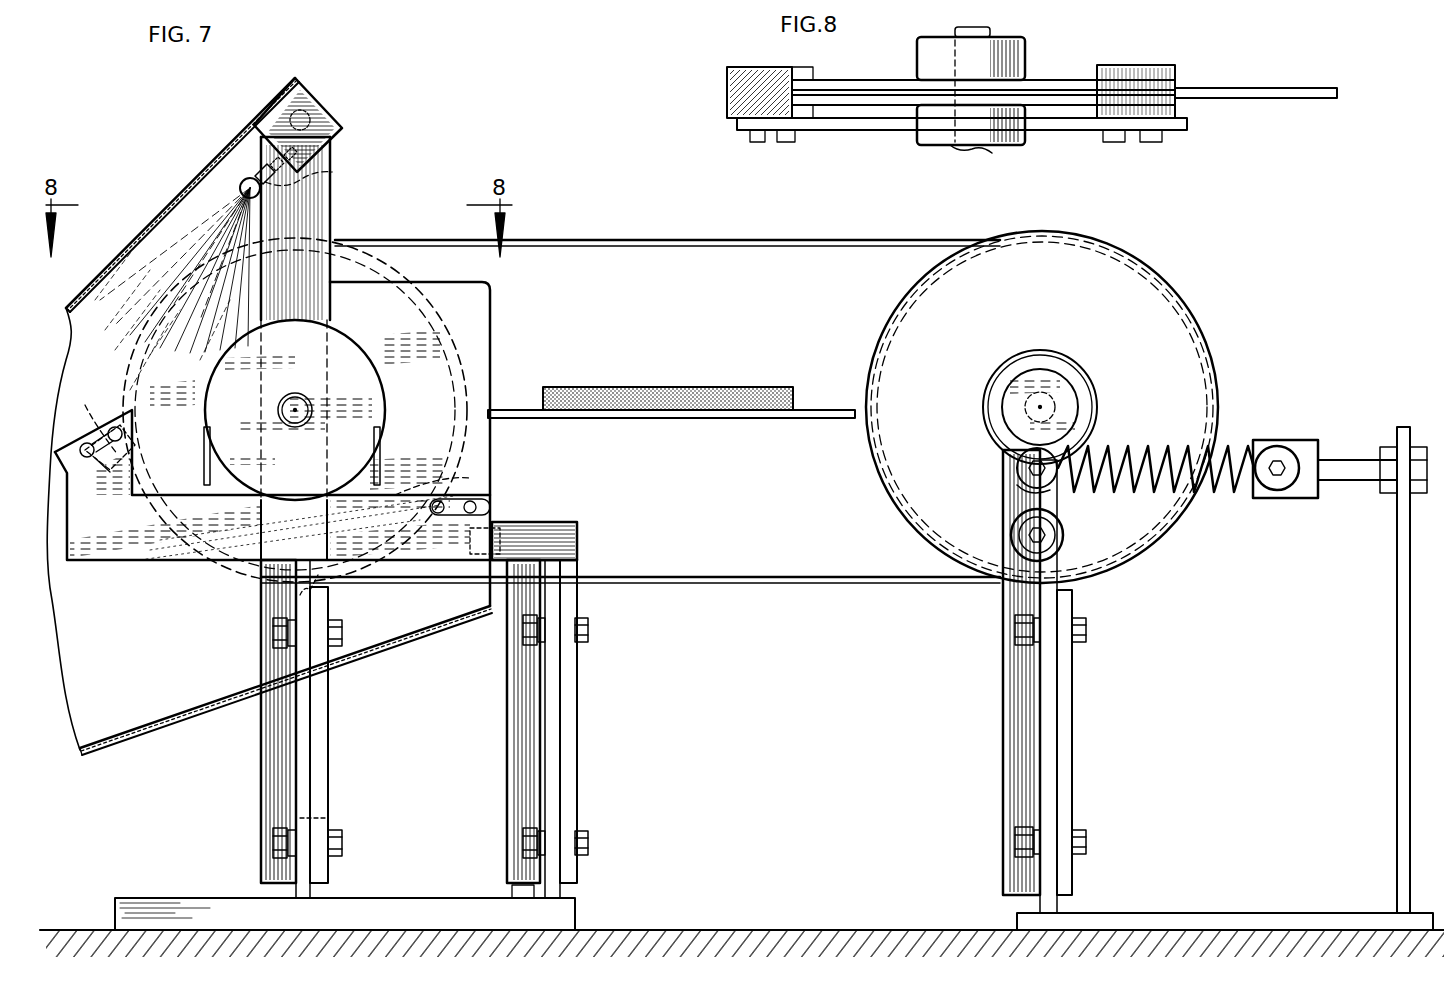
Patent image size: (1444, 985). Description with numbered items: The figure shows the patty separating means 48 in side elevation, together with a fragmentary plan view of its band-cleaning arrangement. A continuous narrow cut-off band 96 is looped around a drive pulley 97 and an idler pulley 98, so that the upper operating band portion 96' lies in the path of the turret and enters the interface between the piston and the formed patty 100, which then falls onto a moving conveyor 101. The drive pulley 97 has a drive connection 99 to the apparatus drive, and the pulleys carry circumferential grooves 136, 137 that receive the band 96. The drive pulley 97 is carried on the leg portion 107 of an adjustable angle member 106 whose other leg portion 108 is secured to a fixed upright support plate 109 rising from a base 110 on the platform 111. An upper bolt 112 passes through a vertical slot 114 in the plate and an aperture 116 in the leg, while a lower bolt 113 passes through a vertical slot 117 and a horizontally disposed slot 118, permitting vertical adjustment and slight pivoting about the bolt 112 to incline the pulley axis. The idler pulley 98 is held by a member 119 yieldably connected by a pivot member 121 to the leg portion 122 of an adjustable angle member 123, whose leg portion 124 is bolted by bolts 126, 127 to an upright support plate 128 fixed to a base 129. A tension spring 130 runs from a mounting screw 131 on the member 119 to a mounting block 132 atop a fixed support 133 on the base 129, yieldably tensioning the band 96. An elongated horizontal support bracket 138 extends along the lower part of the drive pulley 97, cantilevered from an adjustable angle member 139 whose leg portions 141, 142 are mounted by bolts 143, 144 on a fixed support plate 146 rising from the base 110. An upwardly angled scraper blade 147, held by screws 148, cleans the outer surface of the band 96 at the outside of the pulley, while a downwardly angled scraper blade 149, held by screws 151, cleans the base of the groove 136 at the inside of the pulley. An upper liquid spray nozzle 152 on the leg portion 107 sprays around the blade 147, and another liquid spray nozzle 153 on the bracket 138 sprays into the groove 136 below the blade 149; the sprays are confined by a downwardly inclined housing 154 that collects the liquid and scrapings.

In FIG. 7, the patty separating means 48 is at (1232, 318).
In FIG. 7, the cut-off band 96 is at (631, 601).
In FIG. 7, the upper operating band portion 96' is at (667, 219).
In FIG. 8, the upper operating band portion 96' is at (1256, 64).
In FIG. 7, the drive pulley 97 is at (460, 380).
In FIG. 8, the drive pulley 97 is at (1052, 82).
In FIG. 7, the idler pulley 98 is at (1186, 374).
In FIG. 7, the drive connection 99 is at (385, 455).
In FIG. 7, the formed patty 100 is at (690, 386).
In FIG. 7, the moving conveyor 101 is at (598, 410).
In FIG. 7, the adjustable angle member 106 is at (258, 772).
In FIG. 7, the leg portion 107 is at (268, 732).
In FIG. 7, the leg portion 108 is at (320, 745).
In FIG. 7, the fixed upright support plate 109 is at (305, 780).
In FIG. 7, the base 110 is at (570, 912).
In FIG. 7, the platform 111 is at (730, 930).
In FIG. 7, the upper bolt 112 is at (272, 632).
In FIG. 7, the lower bolt 113 is at (272, 848).
In FIG. 7, the vertical slot 114 is at (330, 606).
In FIG. 7, the aperture 116 is at (340, 634).
In FIG. 7, the vertical slot 117 is at (330, 818).
In FIG. 7, the horizontally disposed slot 118 is at (345, 850).
In FIG. 7, the member 119 is at (1012, 495).
In FIG. 7, the pivot member 121 is at (1016, 535).
In FIG. 7, the leg portion 122 is at (1012, 658).
In FIG. 7, the adjustable angle member 123 is at (996, 708).
In FIG. 7, the leg portion 124 is at (1062, 700).
In FIG. 7, the bolt 126 is at (1086, 634).
In FIG. 7, the bolt 127 is at (1086, 838).
In FIG. 7, the upright support plate 128 is at (1048, 748).
In FIG. 7, the base 129 is at (1232, 913).
In FIG. 7, the tension spring 130 is at (1257, 442).
In FIG. 7, the mounting screw 131 is at (1016, 466).
In FIG. 7, the mounting block 132 is at (1320, 440).
In FIG. 7, the fixed support 133 is at (1396, 635).
In FIG. 7, the circumferential groove 136 is at (470, 438).
In FIG. 8, the circumferential groove 136 is at (860, 82).
In FIG. 7, the circumferential groove 137 is at (878, 455).
In FIG. 7, the horizontal support bracket 138 is at (148, 557).
In FIG. 8, the horizontal support bracket 138 is at (1053, 128).
In FIG. 7, the adjustable angle member 139 is at (500, 757).
In FIG. 7, the leg portion 141 is at (570, 680).
In FIG. 7, the leg portion 142 is at (520, 680).
In FIG. 7, the bolt 143 is at (522, 628).
In FIG. 7, the bolt 144 is at (522, 838).
In FIG. 7, the fixed support plate 146 is at (555, 778).
In FIG. 7, the upwardly angled scraper blade 147 is at (98, 426).
In FIG. 7, the screws 148 is at (105, 462).
In FIG. 7, the downwardly angled scraper blade 149 is at (480, 472).
In FIG. 7, the screws 151 is at (500, 500).
In FIG. 7, the upper liquid spray nozzle 152 is at (305, 186).
In FIG. 7, the liquid spray nozzle 153 is at (578, 528).
In FIG. 7, the housing 154 is at (128, 235).